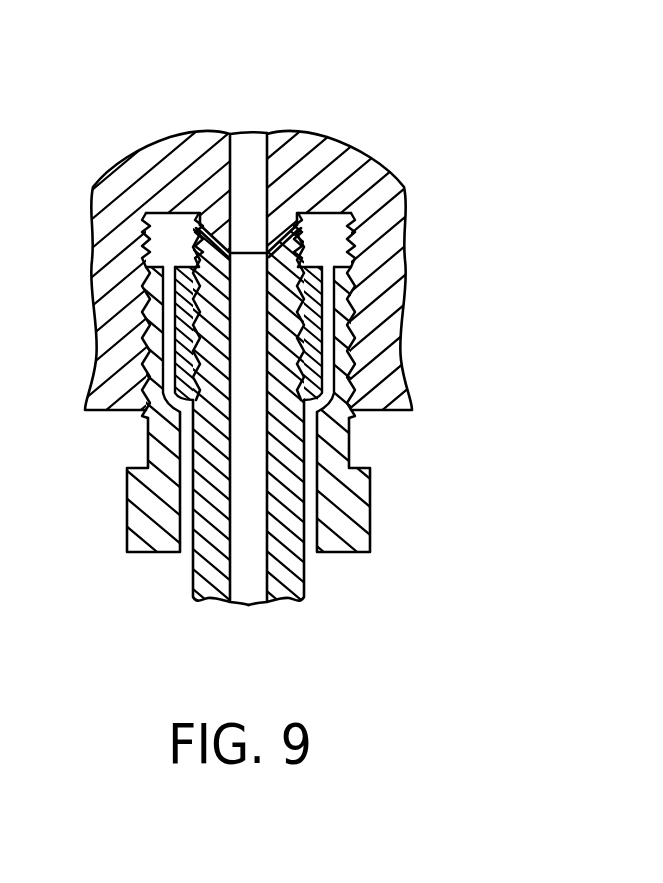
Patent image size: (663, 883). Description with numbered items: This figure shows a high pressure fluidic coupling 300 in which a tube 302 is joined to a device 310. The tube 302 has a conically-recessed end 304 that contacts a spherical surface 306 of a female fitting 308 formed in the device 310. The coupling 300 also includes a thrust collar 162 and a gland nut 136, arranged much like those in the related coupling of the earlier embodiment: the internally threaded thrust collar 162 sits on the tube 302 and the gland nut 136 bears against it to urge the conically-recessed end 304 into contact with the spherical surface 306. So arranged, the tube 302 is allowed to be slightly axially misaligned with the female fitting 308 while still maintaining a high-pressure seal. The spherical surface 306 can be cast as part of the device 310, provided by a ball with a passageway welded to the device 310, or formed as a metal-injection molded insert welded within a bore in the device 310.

The high pressure coupling 300 is at (287, 365).
The tube 302 is at (193, 580).
The conically-recessed end 304 is at (202, 225).
The spherical surface 306 is at (300, 222).
The female fitting 308 is at (163, 250).
The device 310 is at (404, 187).
The thrust collar 162 is at (318, 266).
The gland nut 136 is at (371, 539).